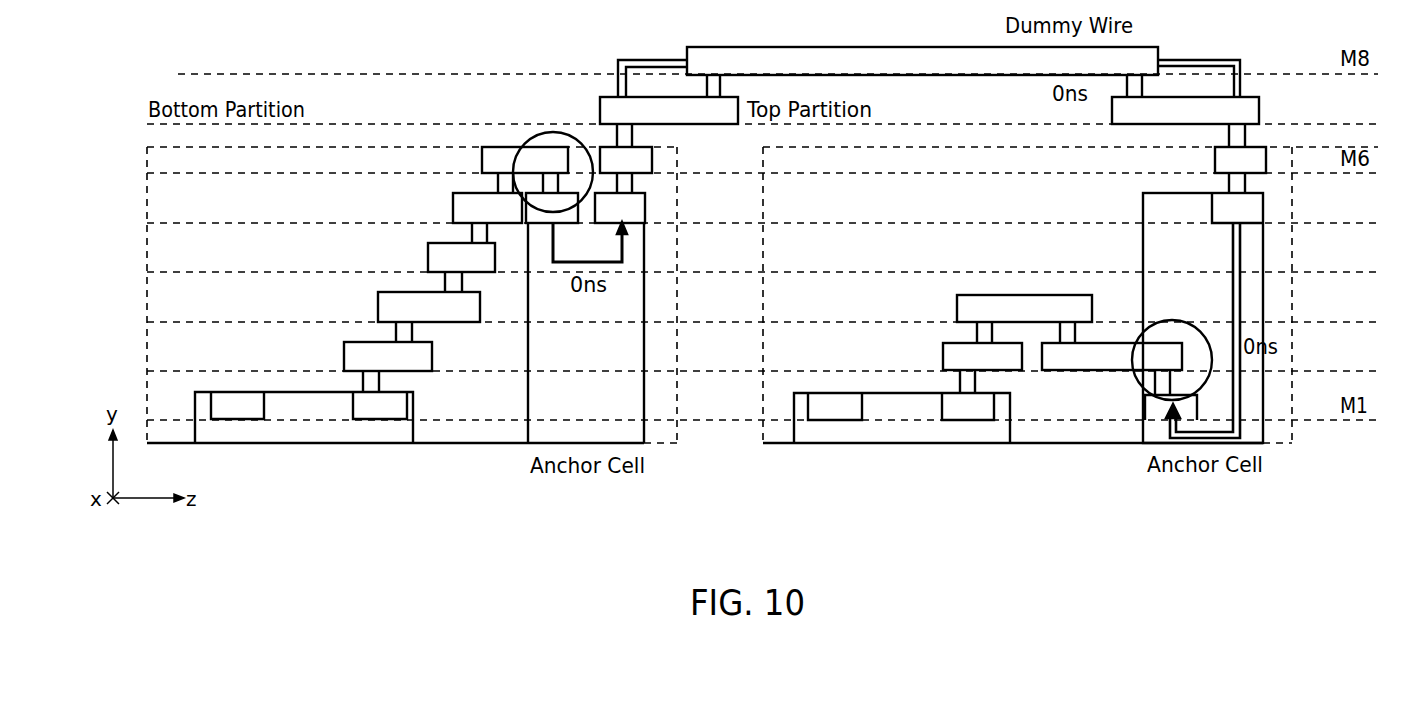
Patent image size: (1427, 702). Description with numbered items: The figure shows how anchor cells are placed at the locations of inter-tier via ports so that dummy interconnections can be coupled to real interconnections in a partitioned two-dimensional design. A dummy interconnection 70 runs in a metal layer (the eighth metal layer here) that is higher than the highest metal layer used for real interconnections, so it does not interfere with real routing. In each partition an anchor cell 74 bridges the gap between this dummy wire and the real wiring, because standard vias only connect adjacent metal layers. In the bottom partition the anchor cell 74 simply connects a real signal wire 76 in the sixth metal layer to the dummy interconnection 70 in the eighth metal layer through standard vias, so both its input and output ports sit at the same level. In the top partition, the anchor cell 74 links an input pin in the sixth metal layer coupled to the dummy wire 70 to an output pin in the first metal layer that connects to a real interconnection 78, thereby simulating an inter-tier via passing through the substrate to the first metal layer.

The dummy interconnection 70 is at (916, 47).
The anchor cell 74 is at (527, 398).
The real signal wire 76 is at (556, 132).
The real interconnection 78 is at (1088, 372).